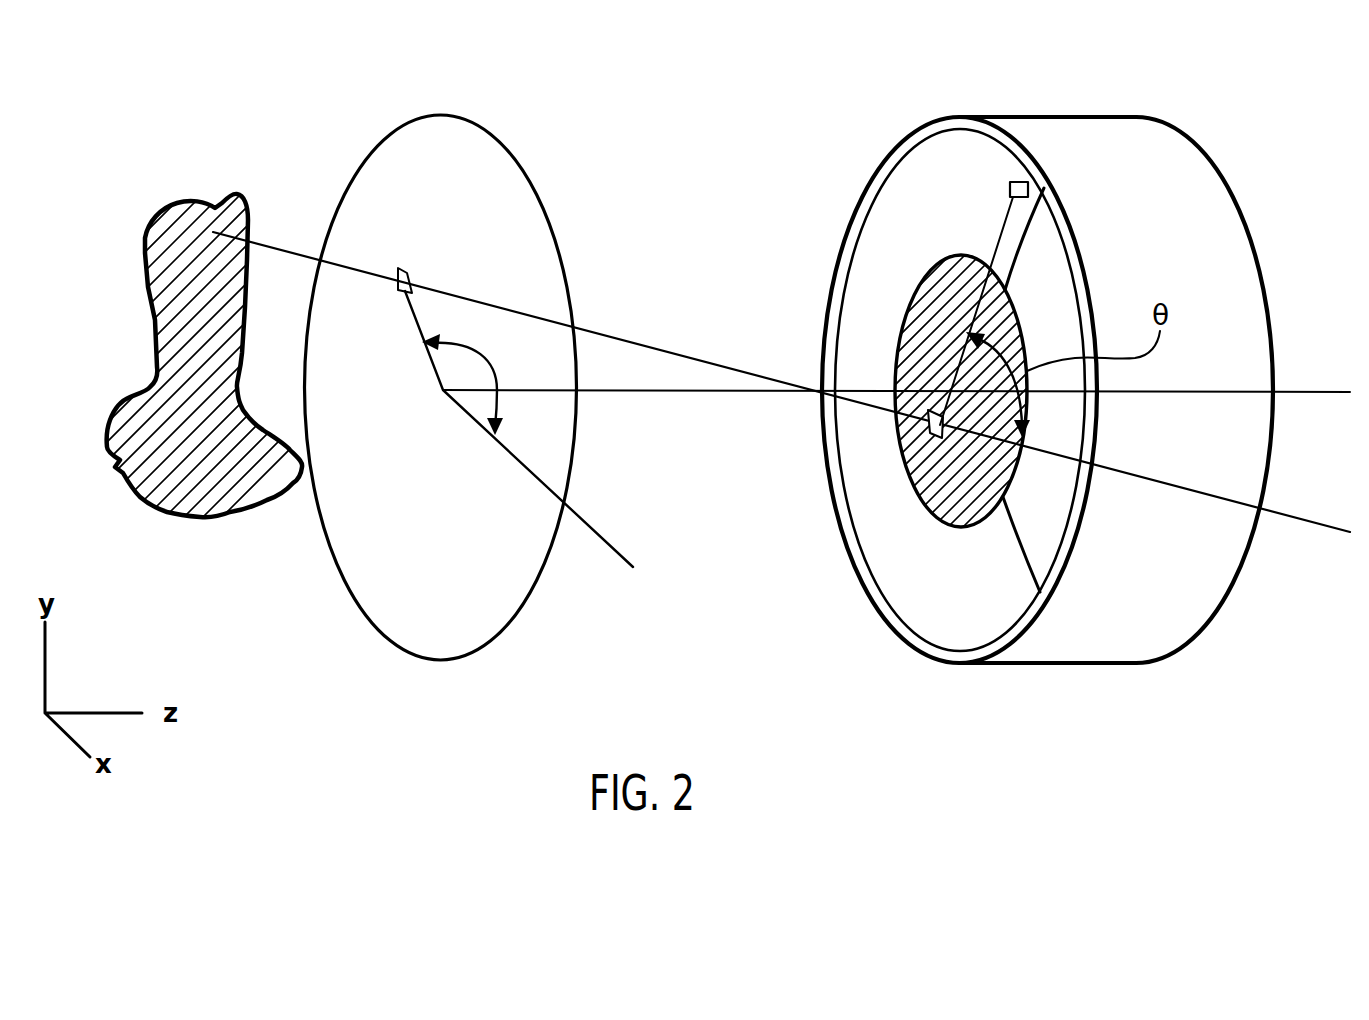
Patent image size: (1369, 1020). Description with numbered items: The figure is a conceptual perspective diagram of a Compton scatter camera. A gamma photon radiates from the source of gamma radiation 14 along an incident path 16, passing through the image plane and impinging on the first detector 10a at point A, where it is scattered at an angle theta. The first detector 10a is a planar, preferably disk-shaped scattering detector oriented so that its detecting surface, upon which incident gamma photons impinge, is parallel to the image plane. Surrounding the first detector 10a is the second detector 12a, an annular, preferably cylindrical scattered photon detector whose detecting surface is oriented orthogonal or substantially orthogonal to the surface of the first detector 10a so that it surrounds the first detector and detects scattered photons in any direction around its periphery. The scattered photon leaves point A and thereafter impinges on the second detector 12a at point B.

The source of gamma radiation 14 is at (175, 308).
The incident path 16 is at (294, 262).
The first detector 10a is at (942, 266).
The second detector 12a is at (1165, 152).
The point A is at (897, 472).
The point B is at (1017, 182).